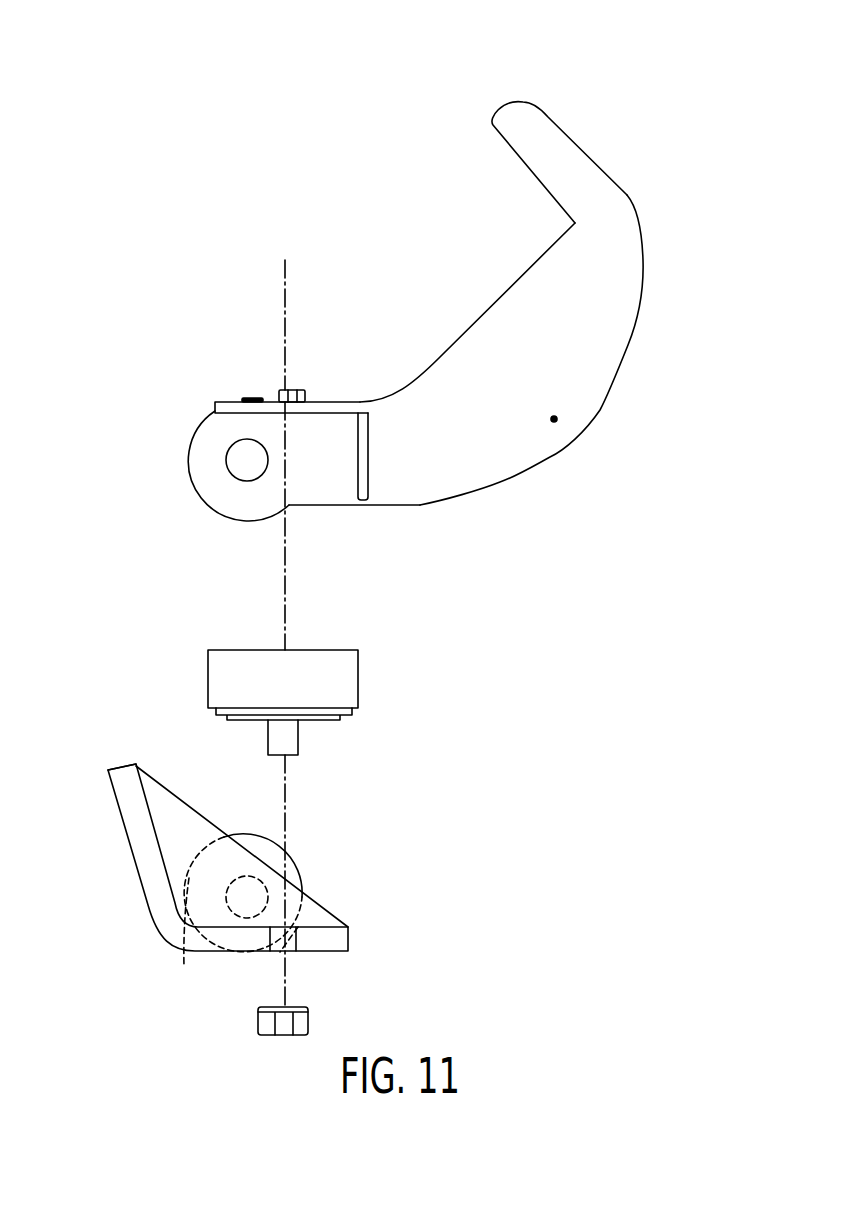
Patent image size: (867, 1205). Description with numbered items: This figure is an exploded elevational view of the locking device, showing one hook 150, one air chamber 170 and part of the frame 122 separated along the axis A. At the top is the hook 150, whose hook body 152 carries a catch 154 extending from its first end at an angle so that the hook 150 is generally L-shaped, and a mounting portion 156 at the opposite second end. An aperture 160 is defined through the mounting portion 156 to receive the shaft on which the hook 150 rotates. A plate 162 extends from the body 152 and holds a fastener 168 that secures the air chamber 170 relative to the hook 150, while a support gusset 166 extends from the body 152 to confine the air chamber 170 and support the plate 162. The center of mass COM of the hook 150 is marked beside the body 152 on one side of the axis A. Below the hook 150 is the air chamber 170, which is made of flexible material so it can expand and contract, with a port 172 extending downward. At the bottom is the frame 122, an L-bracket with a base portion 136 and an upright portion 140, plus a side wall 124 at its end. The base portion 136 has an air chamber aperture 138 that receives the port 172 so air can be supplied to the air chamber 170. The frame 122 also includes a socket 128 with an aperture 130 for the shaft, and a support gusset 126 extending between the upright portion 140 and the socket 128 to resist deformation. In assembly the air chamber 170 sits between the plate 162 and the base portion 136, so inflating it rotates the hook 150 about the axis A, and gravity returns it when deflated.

The hook 150 is at (663, 172).
The hook body 152 is at (610, 330).
The catch 154 is at (557, 153).
The mounting portion 156 is at (296, 520).
The aperture 160 is at (262, 453).
The plate 162 is at (220, 405).
The support gusset 166 is at (364, 462).
The fastener 168 is at (298, 389).
The air chamber 170 is at (348, 680).
The port 172 is at (288, 735).
The frame 122 is at (150, 885).
The side wall 124 is at (170, 795).
The support gusset 126 is at (185, 838).
The socket 128 is at (234, 937).
The aperture 130 is at (243, 870).
The base portion 136 is at (335, 943).
The air chamber aperture 138 is at (295, 953).
The upright portion 140 is at (132, 808).
The axis A is at (287, 266).
The center of mass COM is at (554, 418).